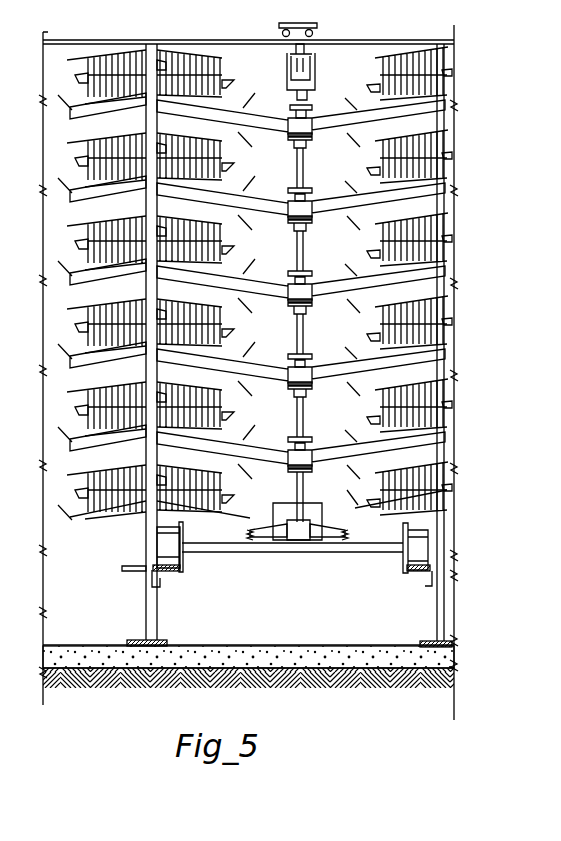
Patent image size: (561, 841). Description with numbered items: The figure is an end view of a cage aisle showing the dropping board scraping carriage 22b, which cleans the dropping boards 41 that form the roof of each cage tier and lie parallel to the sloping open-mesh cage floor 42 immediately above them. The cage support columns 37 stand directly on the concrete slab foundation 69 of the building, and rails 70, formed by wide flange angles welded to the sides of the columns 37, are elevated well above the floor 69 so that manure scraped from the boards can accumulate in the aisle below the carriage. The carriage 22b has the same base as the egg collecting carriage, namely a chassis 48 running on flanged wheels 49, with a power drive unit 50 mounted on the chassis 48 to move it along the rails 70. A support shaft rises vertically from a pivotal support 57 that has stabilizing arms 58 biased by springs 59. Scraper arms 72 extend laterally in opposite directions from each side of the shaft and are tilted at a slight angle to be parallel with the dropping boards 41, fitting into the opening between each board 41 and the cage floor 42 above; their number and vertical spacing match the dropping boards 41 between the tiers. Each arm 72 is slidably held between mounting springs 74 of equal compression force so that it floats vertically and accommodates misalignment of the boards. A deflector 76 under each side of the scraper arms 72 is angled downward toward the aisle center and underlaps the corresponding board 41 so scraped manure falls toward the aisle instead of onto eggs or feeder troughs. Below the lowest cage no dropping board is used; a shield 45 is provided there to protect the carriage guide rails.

The dropping board scraping carriage 22b is at (228, 561).
The cage support column 37 is at (145, 608).
The dropping board 41 is at (362, 182).
The cage floor 42 is at (397, 100).
The shield 45 is at (120, 506).
The chassis 48 is at (308, 545).
The flanged wheel 49 is at (165, 541).
The power drive unit 50 is at (330, 498).
The pivotal support 57 is at (298, 540).
The stabilizing arm 58 is at (247, 523).
The spring 59 is at (247, 534).
The concrete slab foundation 69 is at (296, 652).
The rail 70 is at (168, 585).
The scraper arm 72 is at (276, 120).
The mounting spring 74 is at (335, 103).
The deflector 76 is at (243, 140).